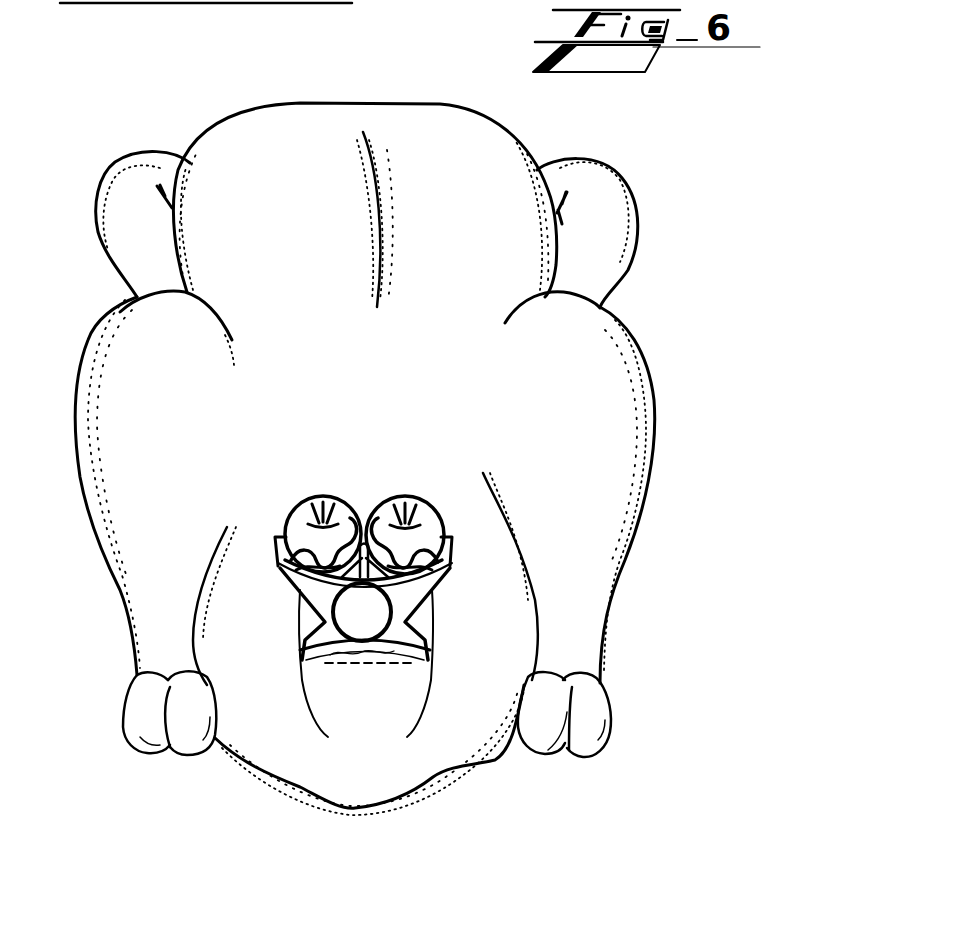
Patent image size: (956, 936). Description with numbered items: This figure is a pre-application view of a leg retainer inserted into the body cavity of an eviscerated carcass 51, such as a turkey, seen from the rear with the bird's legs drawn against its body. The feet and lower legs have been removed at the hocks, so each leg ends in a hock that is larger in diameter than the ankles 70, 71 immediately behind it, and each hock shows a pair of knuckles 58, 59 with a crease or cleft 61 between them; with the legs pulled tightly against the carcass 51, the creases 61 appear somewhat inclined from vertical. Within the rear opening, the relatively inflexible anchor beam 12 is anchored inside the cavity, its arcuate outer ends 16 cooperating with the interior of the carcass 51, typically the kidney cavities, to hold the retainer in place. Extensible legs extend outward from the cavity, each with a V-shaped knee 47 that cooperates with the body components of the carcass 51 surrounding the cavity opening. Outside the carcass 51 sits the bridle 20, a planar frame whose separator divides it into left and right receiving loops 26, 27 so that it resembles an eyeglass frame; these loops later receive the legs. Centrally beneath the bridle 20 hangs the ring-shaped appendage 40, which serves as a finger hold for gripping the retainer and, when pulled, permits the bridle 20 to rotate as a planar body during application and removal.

The bridle 20 is at (208, 3).
The eviscerated carcass 51 is at (673, 277).
The left receiving opening or loop 26 is at (302, 535).
The right receiving opening or loop 27 is at (426, 532).
The appendage 40 is at (394, 611).
The V-shaped knee 47 is at (400, 650).
The outer ends of anchor beam 16 is at (298, 670).
The ankle 71 is at (140, 670).
The ankle 70 is at (603, 668).
The knuckle 58 is at (138, 740).
The knuckle 59 is at (180, 752).
The crease or cleft 61 is at (170, 753).
The anchor beam 12 is at (363, 667).